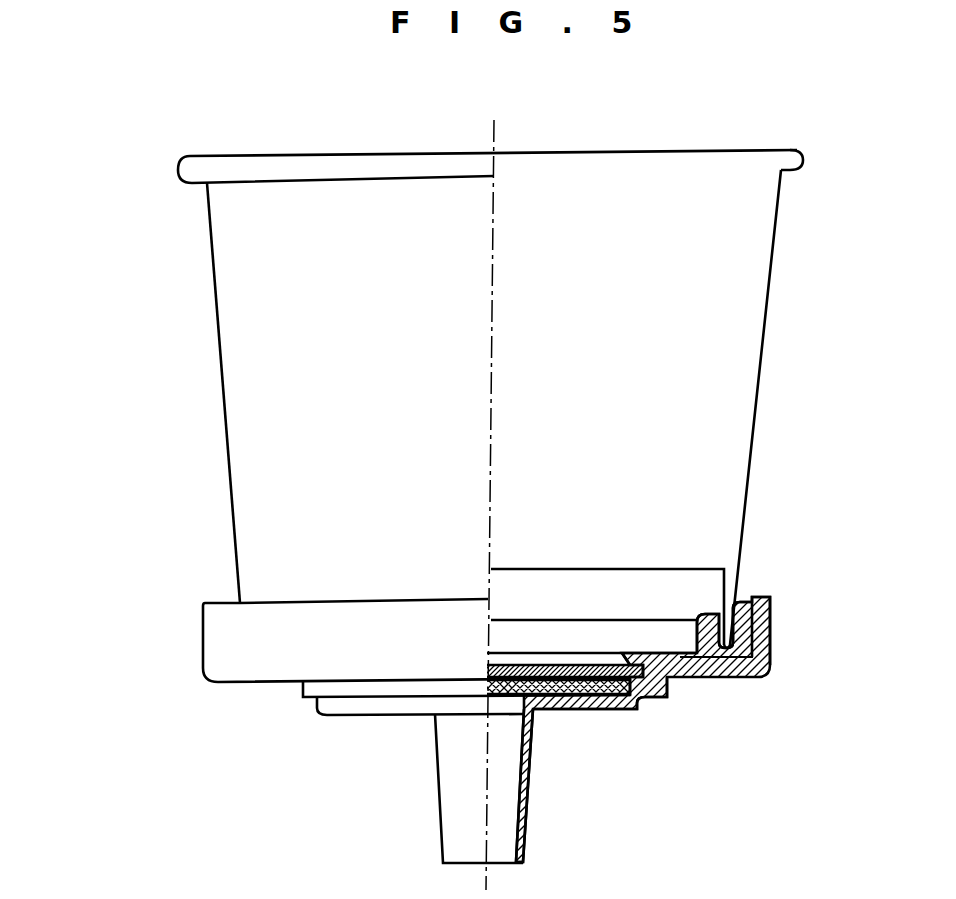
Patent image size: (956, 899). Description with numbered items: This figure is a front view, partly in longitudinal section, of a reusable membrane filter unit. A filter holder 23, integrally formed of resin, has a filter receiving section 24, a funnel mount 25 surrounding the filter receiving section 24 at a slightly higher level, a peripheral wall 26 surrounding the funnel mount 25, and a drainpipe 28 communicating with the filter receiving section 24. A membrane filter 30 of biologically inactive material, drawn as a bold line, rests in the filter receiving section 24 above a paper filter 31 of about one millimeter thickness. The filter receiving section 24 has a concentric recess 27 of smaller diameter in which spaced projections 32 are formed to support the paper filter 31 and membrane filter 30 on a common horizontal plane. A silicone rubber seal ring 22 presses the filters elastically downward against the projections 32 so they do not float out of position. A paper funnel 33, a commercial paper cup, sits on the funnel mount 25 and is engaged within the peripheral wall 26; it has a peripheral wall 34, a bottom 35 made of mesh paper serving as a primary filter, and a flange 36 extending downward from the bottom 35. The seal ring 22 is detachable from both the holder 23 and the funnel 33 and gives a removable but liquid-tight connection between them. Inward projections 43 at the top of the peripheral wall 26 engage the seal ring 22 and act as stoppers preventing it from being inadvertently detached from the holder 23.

The seal ring 22 is at (734, 678).
The filter holder 23 is at (226, 713).
The filter receiving section 24 is at (636, 656).
The funnel mount 25 is at (680, 652).
The peripheral wall 26 is at (773, 625).
The concentric recess 27 is at (607, 712).
The drainpipe 28 is at (459, 834).
The membrane filter 30 is at (562, 665).
The paper filter 31 is at (512, 681).
The spaced projections 32 is at (537, 716).
The paper funnel 33 is at (216, 357).
The peripheral wall 34 is at (759, 356).
The bottom 35 is at (700, 567).
The flange 36 is at (729, 578).
The inward projections 43 is at (753, 597).